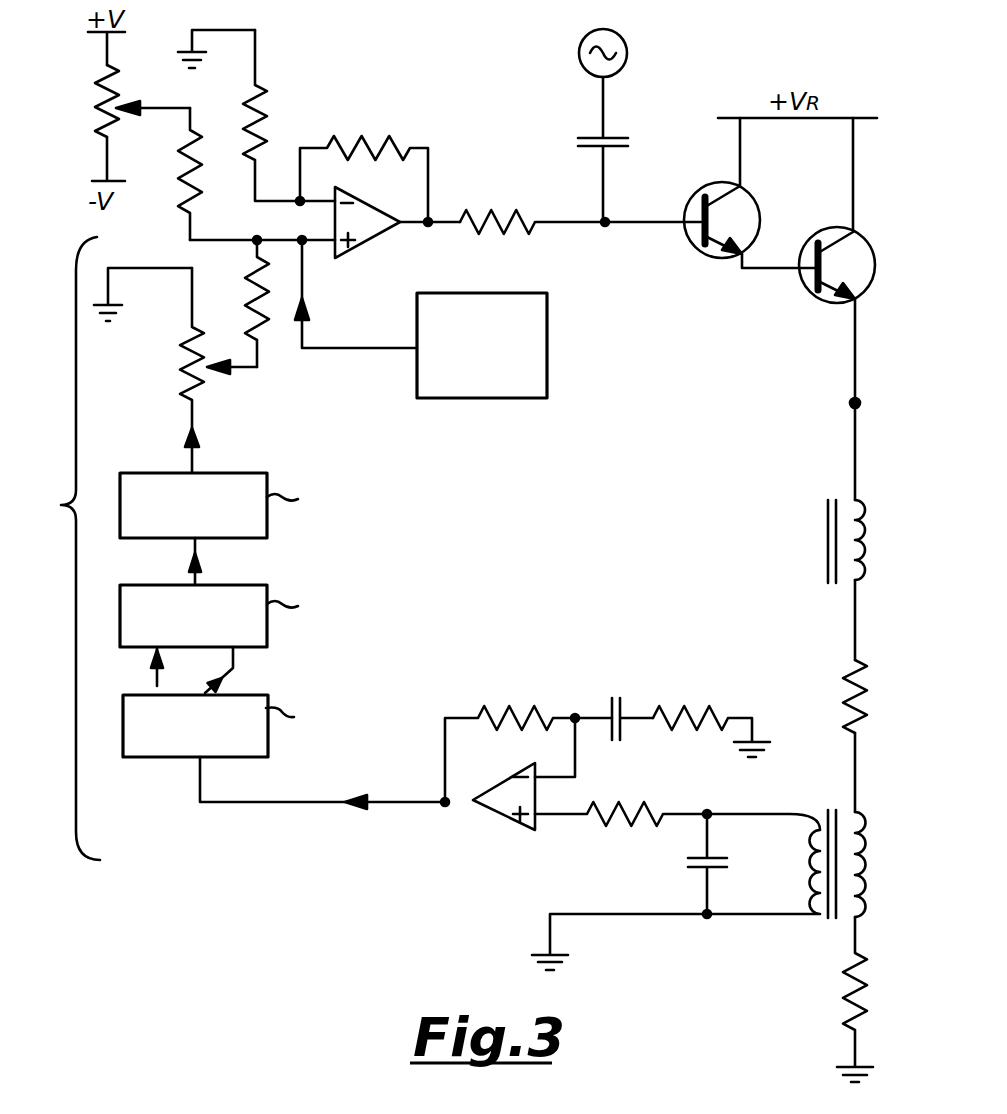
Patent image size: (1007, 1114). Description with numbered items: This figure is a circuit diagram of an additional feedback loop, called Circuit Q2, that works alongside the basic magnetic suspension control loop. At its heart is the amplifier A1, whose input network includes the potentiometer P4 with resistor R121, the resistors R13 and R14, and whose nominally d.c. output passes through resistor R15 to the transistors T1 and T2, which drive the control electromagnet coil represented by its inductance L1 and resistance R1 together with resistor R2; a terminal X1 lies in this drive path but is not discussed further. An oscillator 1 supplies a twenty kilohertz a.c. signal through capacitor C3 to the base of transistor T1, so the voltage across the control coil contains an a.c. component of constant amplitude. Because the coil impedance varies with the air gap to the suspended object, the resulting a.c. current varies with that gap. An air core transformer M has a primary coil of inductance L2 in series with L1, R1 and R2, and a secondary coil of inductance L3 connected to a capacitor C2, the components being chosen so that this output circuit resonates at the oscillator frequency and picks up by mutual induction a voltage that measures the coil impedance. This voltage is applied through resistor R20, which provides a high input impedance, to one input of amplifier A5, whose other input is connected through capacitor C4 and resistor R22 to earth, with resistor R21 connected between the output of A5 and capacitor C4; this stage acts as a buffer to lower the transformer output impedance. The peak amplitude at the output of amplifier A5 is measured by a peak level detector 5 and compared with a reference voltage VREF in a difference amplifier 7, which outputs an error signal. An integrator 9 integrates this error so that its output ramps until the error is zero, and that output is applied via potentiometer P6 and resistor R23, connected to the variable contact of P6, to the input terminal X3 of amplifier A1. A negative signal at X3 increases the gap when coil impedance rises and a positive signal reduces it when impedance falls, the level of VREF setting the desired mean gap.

The oscillator 1 is at (579, 53).
The peak level detector 5 is at (276, 731).
The difference amplifier 7 is at (295, 616).
The integrator 9 is at (297, 505).
The Circuit Q2 is at (283, 548).
The potentiometer P4 is at (142, 101).
The potentiometer P6 is at (207, 370).
The resistor R121 is at (169, 174).
The resistor R13 is at (289, 115).
The resistor R14 is at (364, 164).
The resistor R15 is at (580, 208).
The resistor R23 is at (236, 303).
The amplifier A1 is at (367, 227).
The input terminal X3 is at (305, 244).
The capacitor C3 is at (611, 149).
The transistor T1 is at (749, 209).
The transistor T2 is at (837, 260).
The node X1 is at (875, 404).
The inductance of control coil L1 is at (865, 541).
The resistance of control coil R1 is at (873, 696).
The inductance of primary coil L2 is at (880, 864).
The inductance of secondary coil L3 is at (763, 864).
The air core transformer M is at (829, 880).
The resistor R2 is at (870, 999).
The capacitor C2 is at (717, 864).
The resistor R20 is at (621, 798).
The resistor R21 is at (528, 739).
The resistor R22 is at (711, 717).
The capacitor C4 is at (618, 714).
The amplifier A5 is at (503, 809).
The reference voltage VREF is at (124, 670).